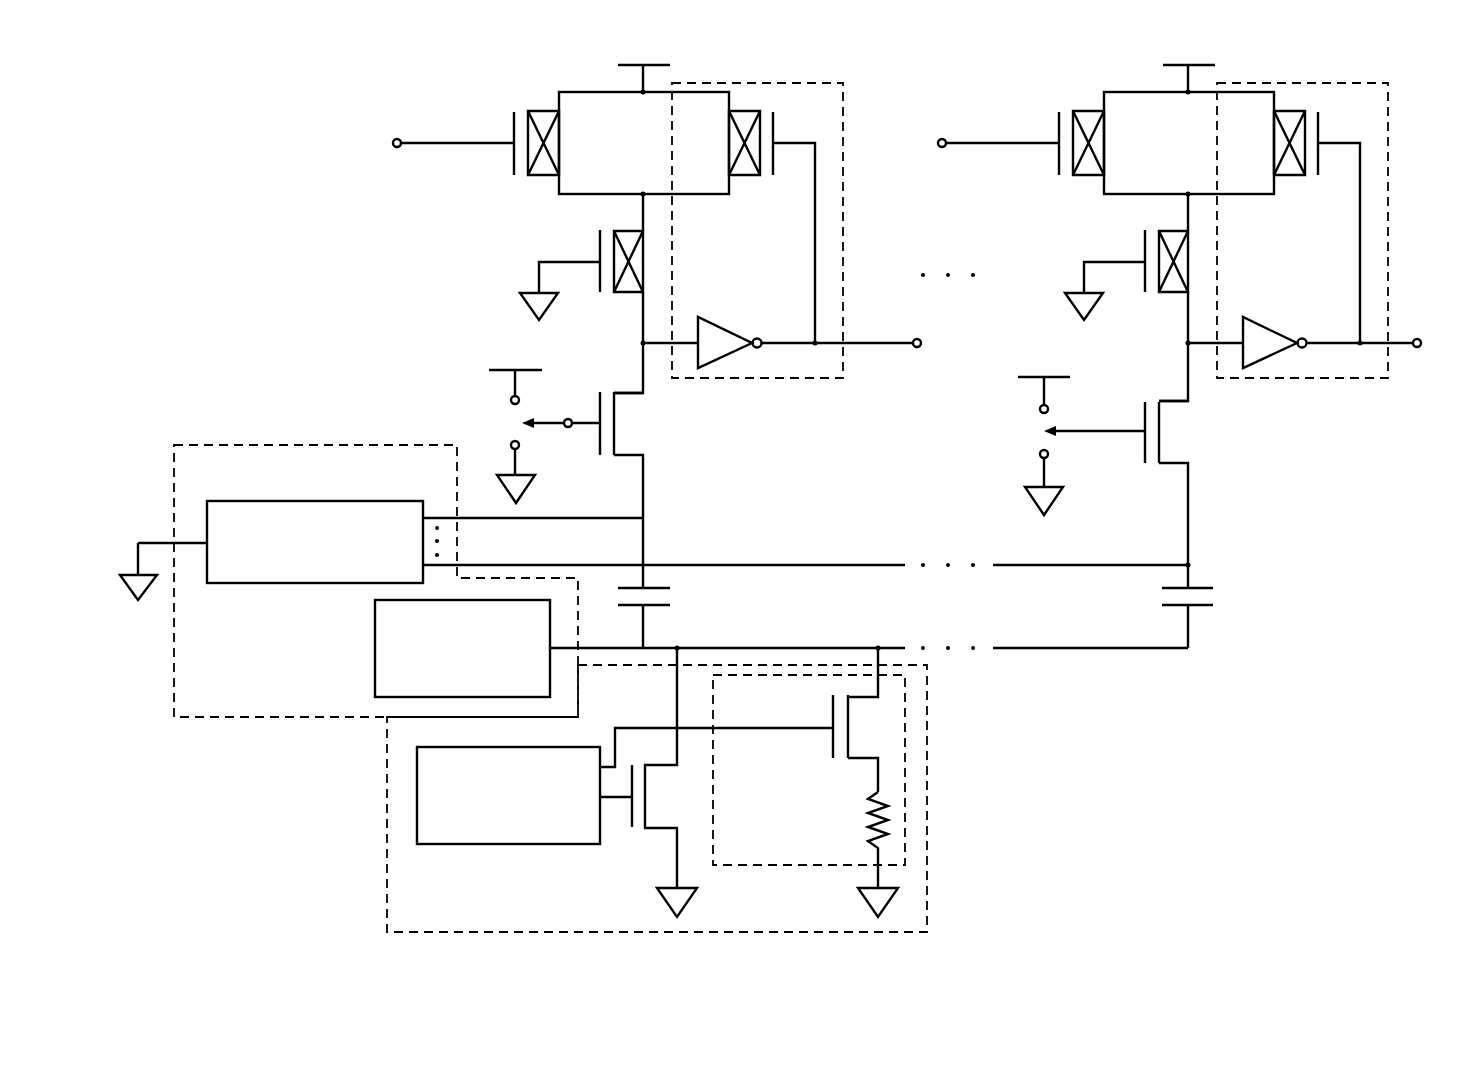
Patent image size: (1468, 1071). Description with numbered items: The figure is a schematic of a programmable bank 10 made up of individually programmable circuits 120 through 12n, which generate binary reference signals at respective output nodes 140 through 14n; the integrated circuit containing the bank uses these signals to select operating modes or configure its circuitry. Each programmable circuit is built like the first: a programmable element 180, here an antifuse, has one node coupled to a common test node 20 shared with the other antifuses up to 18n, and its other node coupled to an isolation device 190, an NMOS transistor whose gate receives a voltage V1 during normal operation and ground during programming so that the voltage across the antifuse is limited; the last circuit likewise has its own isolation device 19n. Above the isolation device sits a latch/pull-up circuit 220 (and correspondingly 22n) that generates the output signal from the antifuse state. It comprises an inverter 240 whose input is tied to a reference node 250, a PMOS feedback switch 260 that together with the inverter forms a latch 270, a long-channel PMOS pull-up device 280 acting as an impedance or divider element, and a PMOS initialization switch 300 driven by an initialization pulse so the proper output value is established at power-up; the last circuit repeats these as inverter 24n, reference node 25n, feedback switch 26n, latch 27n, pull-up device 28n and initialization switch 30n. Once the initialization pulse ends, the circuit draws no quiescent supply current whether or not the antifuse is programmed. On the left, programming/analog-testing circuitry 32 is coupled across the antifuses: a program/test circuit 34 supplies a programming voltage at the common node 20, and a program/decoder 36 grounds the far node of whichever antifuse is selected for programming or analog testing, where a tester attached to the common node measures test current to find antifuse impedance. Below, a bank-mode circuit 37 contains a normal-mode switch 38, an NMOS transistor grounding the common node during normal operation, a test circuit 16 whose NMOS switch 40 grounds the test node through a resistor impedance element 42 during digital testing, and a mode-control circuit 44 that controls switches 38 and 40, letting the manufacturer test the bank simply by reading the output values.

The programmable bank 10 is at (1278, 746).
The programmable circuit 120 is at (732, 421).
The programmable circuit 12n is at (1234, 430).
The output node 140 is at (878, 347).
The output node 14n is at (1397, 350).
The test circuit 16 is at (905, 805).
The programmable element 180 is at (670, 606).
The programmable element 18n is at (1200, 588).
The isolation device 190 is at (634, 395).
The isolation device 19n is at (1165, 463).
The test node 20 is at (810, 647).
The latch/pull-up circuit 220 is at (495, 269).
The latch/pull-up circuit 22n is at (1416, 249).
The inverter 240 is at (731, 320).
The inverter 24n is at (1274, 318).
The reference node 250 is at (643, 343).
The reference node 25n is at (1188, 343).
The feedback switch 260 is at (760, 177).
The feedback switch 26n is at (1293, 177).
The latch 270 is at (845, 208).
The latch 27n is at (1390, 152).
The pull-up device 280 is at (645, 232).
The pull-up device 28n is at (1160, 231).
The initialization switch 300 is at (538, 177).
The initialization switch 30n is at (1081, 177).
The programming/analog-testing circuitry 32 is at (256, 445).
The program/test circuit 34 is at (375, 665).
The program/decoder 36 is at (282, 583).
The bank-mode circuit 37 is at (928, 722).
The normal-mode switch 38 is at (657, 832).
The switch 40 is at (852, 762).
The impedance element 42 is at (866, 832).
The mode-control circuit 44 is at (495, 844).